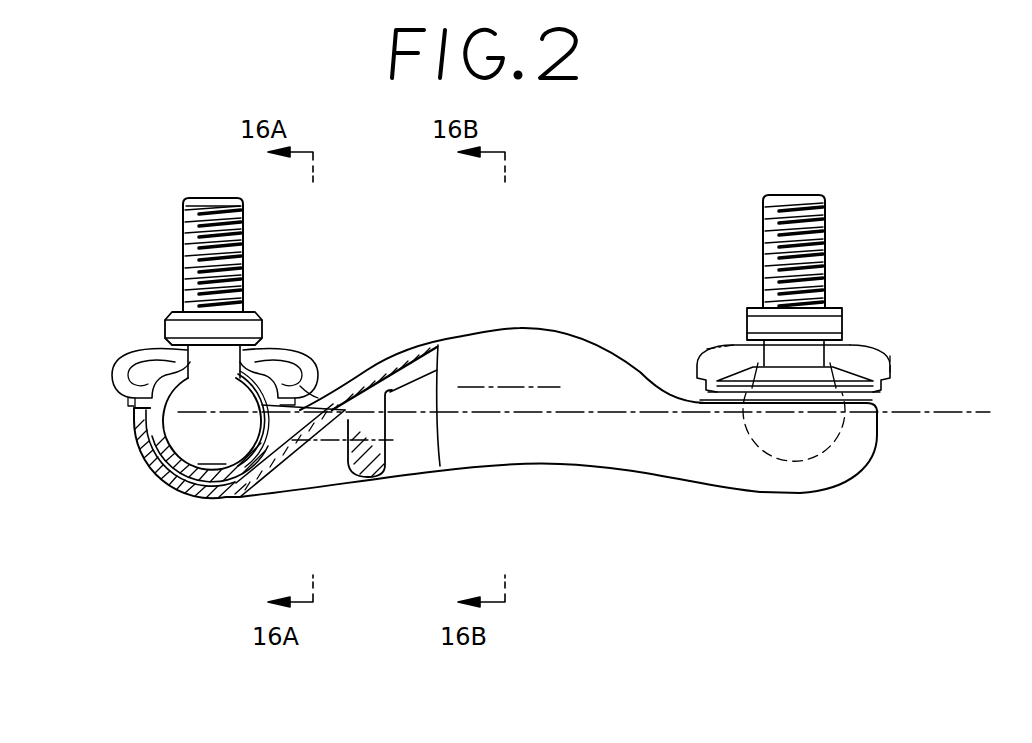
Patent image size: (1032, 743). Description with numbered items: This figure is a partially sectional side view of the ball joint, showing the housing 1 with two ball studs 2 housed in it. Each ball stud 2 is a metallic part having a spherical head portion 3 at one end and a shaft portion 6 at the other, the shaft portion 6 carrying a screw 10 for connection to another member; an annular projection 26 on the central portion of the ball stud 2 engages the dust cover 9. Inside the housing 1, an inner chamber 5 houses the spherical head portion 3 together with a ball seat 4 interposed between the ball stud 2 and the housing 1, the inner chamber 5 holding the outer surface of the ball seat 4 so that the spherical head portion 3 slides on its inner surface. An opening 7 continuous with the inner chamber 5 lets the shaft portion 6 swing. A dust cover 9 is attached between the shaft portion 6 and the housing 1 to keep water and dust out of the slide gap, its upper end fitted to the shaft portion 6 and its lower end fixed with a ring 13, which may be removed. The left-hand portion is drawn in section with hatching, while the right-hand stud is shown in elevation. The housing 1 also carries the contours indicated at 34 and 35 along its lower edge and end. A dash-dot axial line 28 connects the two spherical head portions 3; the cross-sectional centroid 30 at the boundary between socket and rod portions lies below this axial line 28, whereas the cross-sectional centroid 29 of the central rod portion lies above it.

The housing 1 is at (505, 332).
The ball stud 2 is at (266, 298).
The spherical head portion 3 is at (188, 444).
The ball seat 4 is at (242, 496).
The inner chamber 5 is at (134, 425).
The shaft portion 6 is at (245, 252).
The opening 7 is at (158, 362).
The dust cover 9 is at (306, 394).
The screw 10 is at (245, 222).
The ring 13 is at (127, 404).
The annular projection 26 is at (262, 326).
The axial line 28 is at (545, 416).
The cross-sectional centroid 29 is at (562, 348).
The cross-sectional centroid 30 is at (338, 440).
The lower edge of arm 34 is at (497, 468).
The arm end 35 is at (763, 491).